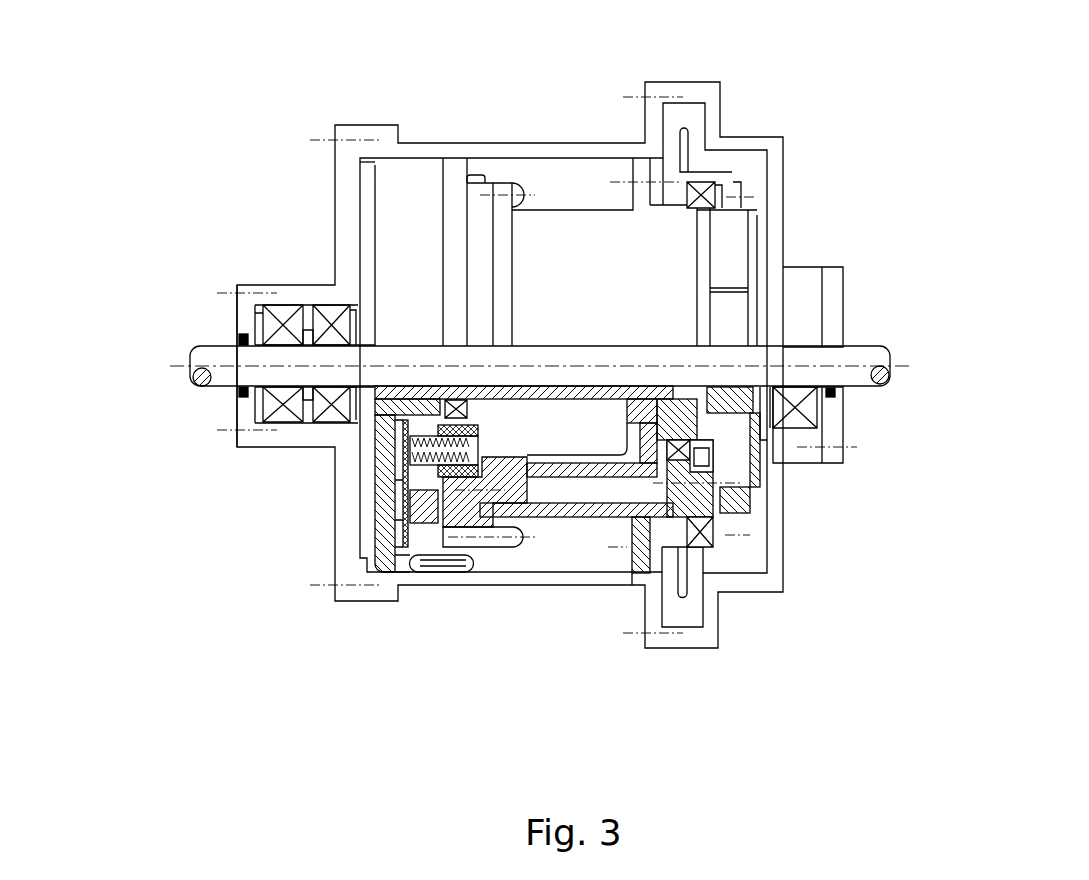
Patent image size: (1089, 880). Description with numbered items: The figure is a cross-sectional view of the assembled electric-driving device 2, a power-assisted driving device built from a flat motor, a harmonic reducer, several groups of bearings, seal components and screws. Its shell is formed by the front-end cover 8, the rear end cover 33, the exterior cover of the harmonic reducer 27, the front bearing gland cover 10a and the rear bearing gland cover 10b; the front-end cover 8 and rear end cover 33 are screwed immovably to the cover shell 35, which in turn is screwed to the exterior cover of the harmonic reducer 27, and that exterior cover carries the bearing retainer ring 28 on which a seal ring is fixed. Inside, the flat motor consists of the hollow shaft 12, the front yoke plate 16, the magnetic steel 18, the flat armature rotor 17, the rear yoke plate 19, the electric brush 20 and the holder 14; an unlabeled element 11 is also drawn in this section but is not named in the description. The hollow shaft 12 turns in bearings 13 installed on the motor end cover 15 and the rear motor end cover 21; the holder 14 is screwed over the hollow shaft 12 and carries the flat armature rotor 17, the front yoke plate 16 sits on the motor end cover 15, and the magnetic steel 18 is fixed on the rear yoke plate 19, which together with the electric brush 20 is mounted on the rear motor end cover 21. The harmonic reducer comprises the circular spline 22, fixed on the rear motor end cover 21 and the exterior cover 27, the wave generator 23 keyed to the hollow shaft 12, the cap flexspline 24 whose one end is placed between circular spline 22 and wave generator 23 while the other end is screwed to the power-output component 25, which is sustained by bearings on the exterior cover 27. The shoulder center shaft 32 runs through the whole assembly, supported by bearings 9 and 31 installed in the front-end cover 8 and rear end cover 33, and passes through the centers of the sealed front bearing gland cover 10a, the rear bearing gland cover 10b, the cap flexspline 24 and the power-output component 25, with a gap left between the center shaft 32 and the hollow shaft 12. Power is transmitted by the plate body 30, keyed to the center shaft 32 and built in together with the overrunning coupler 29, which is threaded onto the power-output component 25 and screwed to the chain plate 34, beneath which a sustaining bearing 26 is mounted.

The electric-driving device 2 is at (747, 136).
The front-end cover 8 is at (345, 178).
The bearing 9 is at (245, 318).
The front bearing gland cover 10a is at (268, 320).
The rear bearing gland cover 10b is at (833, 418).
The rotor hub 11 is at (378, 392).
The hollow shaft 12 is at (397, 403).
The bearing 13 is at (385, 442).
The holder 14 is at (400, 457).
The motor end cover 15 is at (405, 477).
The front yoke plate 16 is at (410, 502).
The flat armature rotor 17 is at (398, 526).
The magnetic steel 18 is at (388, 575).
The rear yoke plate 19 is at (425, 553).
The electric brush 20 is at (457, 560).
The rear motor end cover 21 is at (483, 567).
The circular spline 22 is at (518, 540).
The wave generator 23 is at (566, 503).
The cap flexspline 24 is at (605, 490).
The power-output component 25 is at (625, 519).
The sustaining bearing 26 is at (713, 555).
The exterior cover of the harmonic reducer 27 is at (716, 520).
The bearing retainer ring 28 is at (729, 483).
The overrunning coupler 29 is at (755, 493).
The plate body 30 is at (755, 455).
The bearing 31 is at (800, 432).
The shoulder center shaft 32 is at (862, 362).
The rear end cover 33 is at (778, 296).
The chain plate 34 is at (725, 178).
The cover shell 35 is at (555, 155).